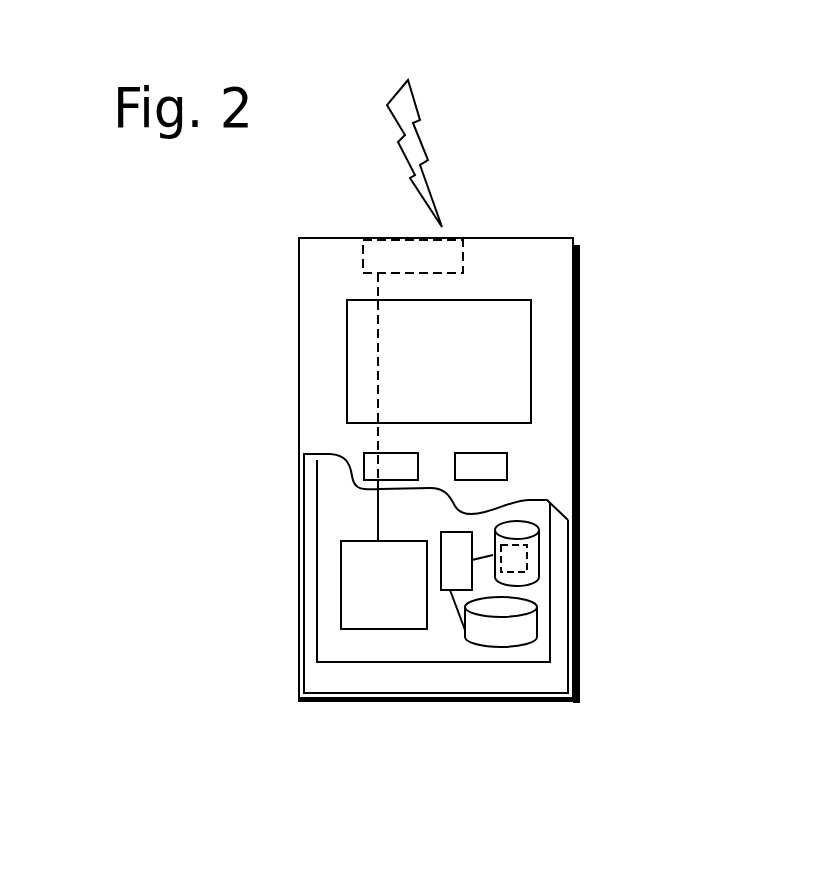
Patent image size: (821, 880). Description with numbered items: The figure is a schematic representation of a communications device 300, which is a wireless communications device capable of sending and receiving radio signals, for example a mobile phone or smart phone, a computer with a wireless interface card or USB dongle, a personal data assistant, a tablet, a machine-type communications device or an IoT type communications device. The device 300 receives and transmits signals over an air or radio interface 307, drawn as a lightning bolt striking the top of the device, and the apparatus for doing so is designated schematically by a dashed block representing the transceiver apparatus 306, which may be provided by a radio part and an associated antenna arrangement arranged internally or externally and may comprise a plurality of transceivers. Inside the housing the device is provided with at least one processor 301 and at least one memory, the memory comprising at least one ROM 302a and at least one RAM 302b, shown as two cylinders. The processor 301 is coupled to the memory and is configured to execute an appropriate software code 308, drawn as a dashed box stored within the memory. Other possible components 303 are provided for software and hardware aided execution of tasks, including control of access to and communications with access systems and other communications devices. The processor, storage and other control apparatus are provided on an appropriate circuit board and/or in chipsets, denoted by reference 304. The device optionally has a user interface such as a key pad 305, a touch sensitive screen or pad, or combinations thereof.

The communications device 300 is at (300, 277).
The processor 301 is at (457, 547).
The ROM 302a is at (540, 558).
The RAM 302b is at (508, 622).
The other possible components 303 is at (364, 462).
The circuit board and/or chipsets 304 is at (347, 569).
The key pad 305 is at (363, 350).
The transceiver apparatus 306 is at (455, 250).
The air or radio interface 307 is at (446, 172).
The software code 308 is at (508, 558).